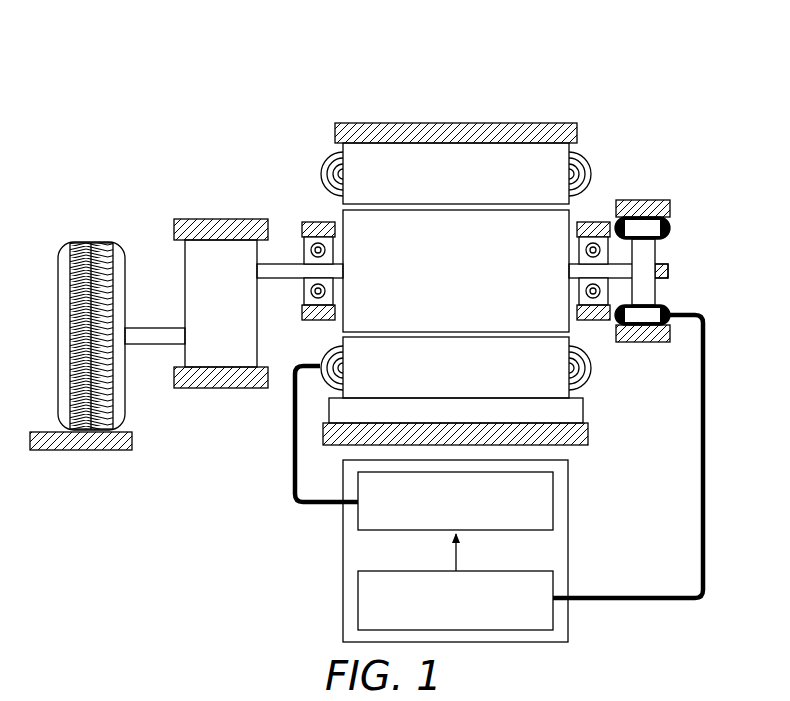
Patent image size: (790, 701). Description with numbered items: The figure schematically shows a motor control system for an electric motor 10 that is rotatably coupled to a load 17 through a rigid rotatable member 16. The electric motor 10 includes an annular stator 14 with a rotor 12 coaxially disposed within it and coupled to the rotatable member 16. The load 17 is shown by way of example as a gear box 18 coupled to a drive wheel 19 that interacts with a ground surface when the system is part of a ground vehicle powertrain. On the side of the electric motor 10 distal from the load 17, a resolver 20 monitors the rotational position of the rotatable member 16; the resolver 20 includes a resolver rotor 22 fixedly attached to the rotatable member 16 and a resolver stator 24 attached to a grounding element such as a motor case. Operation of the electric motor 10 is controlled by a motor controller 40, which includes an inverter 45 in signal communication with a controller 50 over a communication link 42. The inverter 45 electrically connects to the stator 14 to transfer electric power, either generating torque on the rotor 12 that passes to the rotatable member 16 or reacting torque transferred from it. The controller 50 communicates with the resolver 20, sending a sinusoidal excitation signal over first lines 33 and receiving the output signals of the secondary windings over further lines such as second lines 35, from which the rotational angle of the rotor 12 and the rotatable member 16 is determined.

The electric motor 10 is at (141, 135).
The rotor 12 is at (468, 280).
The stator 14 is at (468, 184).
The rotatable member 16 is at (292, 260).
The load 17 is at (143, 238).
The gear box 18 is at (233, 313).
The drive wheel 19 is at (94, 244).
The resolver 20 is at (668, 252).
The resolver rotor 22 is at (656, 288).
The resolver stator 24 is at (655, 224).
The first lines 33 is at (698, 448).
The second lines 35 is at (326, 434).
The motor controller 40 is at (572, 511).
The communication link 42 is at (457, 560).
The inverter 45 is at (468, 509).
The controller 50 is at (468, 599).